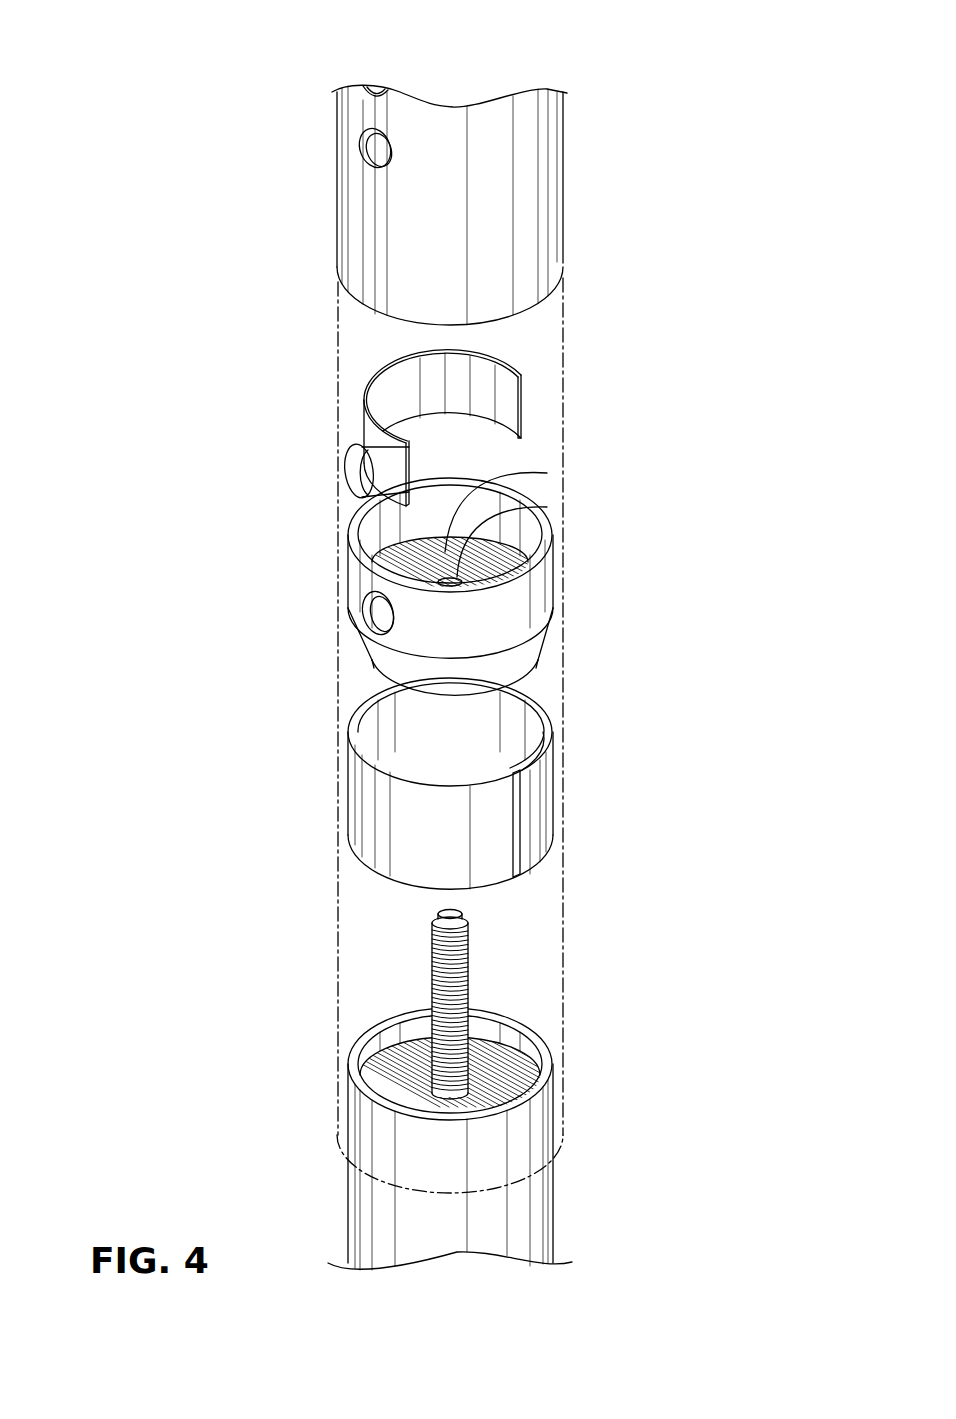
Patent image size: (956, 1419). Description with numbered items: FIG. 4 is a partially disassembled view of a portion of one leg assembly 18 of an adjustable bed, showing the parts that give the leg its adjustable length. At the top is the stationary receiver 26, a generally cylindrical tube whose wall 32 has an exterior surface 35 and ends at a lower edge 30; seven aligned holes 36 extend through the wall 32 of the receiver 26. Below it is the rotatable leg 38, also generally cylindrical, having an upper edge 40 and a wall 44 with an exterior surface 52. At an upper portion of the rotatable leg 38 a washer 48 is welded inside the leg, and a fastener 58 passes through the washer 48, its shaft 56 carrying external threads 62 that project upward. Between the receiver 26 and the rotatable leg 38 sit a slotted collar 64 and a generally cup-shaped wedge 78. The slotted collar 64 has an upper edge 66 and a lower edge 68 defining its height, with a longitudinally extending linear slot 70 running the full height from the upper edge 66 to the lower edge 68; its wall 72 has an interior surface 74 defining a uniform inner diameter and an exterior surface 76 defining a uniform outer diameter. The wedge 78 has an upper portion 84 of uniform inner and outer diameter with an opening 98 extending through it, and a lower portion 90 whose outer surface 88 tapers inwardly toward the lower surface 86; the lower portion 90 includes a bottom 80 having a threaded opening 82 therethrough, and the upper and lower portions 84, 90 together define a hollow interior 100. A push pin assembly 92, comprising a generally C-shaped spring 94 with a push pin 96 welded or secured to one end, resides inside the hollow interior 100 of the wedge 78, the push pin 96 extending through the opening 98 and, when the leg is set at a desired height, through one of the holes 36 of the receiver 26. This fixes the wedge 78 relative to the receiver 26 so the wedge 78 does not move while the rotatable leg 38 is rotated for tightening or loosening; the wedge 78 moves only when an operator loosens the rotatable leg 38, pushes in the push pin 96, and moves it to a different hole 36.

The leg assembly 18 is at (279, 78).
The receiver 26 is at (457, 205).
The lower edge 30 is at (553, 290).
The wall 32 is at (525, 127).
The exterior surface 35 is at (374, 247).
The holes 36 is at (360, 143).
The rotatable leg 38 is at (495, 1152).
The upper edge 40 is at (547, 1060).
The wall 44 is at (548, 1207).
The washer 48 is at (398, 1062).
The exterior surface 52 is at (344, 1188).
The shaft 56 is at (442, 915).
The fastener 58 is at (446, 999).
The external threads 62 is at (468, 962).
The slotted collar 64 is at (453, 798).
The upper edge 66 is at (542, 705).
The lower edge 68 is at (540, 858).
The linear slot 70 is at (513, 846).
The wall 72 is at (540, 830).
The interior surface 74 is at (476, 771).
The exterior surface 76 is at (428, 861).
The wedge 78 is at (463, 583).
The bottom 80 is at (477, 477).
The threaded opening 82 is at (475, 518).
The upper portion 84 is at (540, 592).
The lower surface 86 is at (390, 677).
The outer surface 88 is at (402, 662).
The lower portion 90 is at (523, 652).
The push pin assembly 92 is at (453, 428).
The C-shaped spring 94 is at (508, 408).
The push pin 96 is at (347, 483).
The opening 98 is at (362, 607).
The hollow interior 100 is at (484, 541).